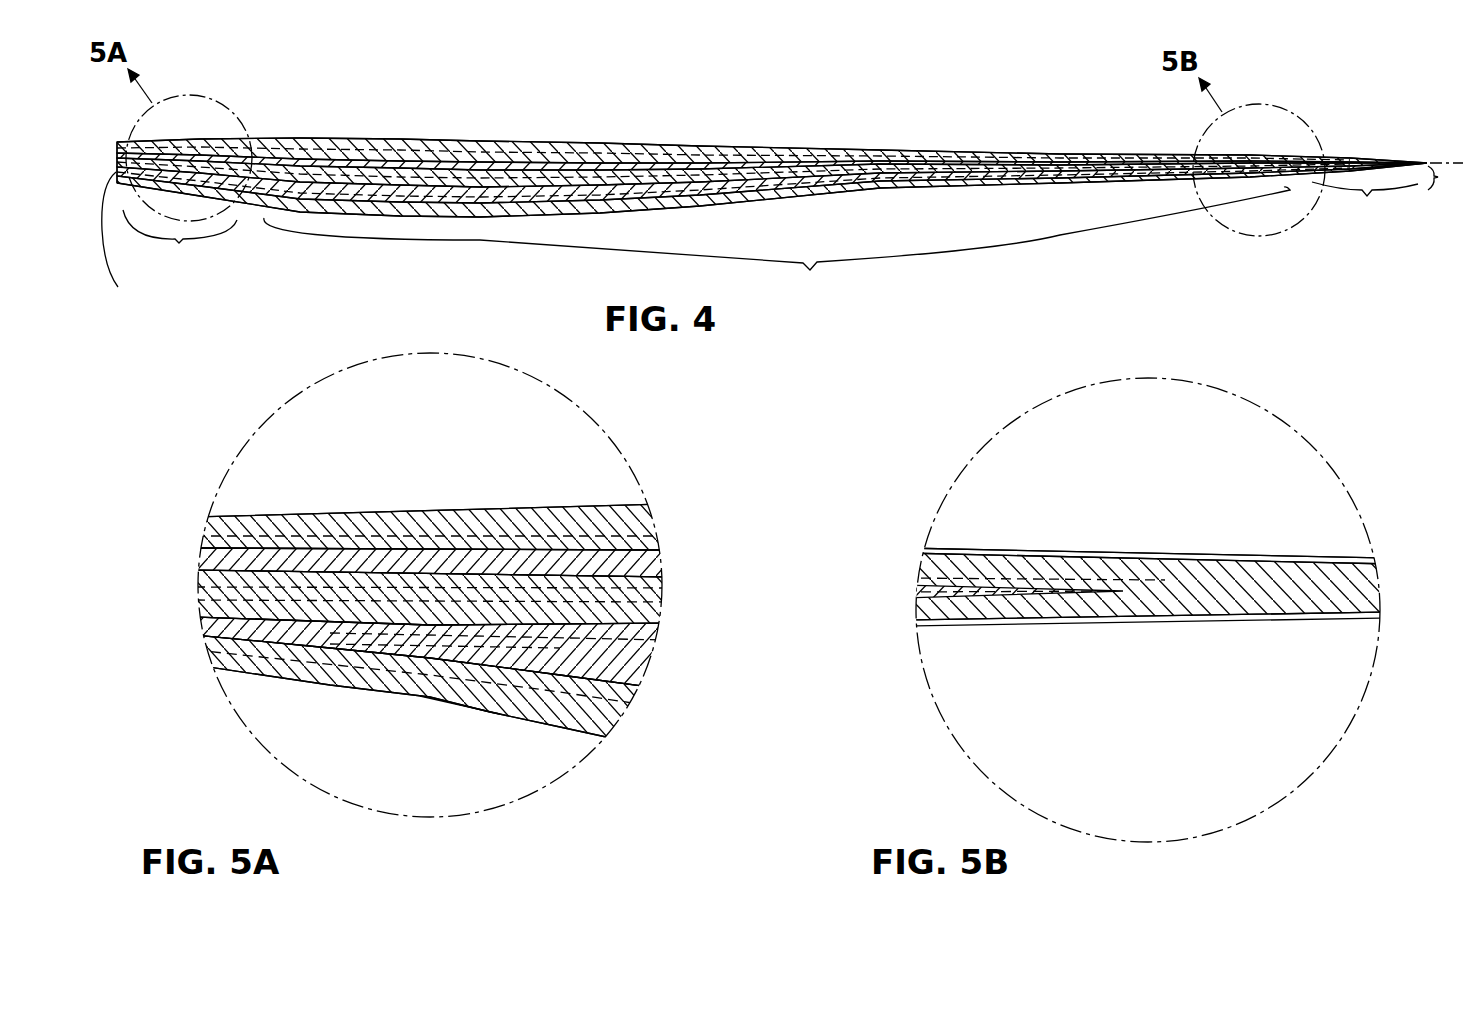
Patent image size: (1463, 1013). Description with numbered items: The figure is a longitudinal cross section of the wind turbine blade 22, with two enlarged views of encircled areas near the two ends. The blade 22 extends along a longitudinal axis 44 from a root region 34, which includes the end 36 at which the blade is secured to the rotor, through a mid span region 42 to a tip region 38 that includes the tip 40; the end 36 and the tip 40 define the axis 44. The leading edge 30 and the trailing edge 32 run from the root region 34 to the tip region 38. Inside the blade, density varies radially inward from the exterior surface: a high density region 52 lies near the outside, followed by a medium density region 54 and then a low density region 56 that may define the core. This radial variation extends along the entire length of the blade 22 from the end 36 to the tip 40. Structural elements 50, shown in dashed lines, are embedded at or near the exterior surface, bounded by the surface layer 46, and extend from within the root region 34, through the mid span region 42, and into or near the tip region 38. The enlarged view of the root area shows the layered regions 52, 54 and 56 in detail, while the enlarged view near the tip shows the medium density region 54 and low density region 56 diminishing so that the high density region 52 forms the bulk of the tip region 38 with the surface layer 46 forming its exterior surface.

In FIG. 4, the wind turbine blade 22 is at (731, 90).
In FIG. 4, the leading edge 30 is at (663, 143).
In FIG. 5A, the leading edge 30 is at (468, 512).
In FIG. 5B, the leading edge 30 is at (1198, 552).
In FIG. 4, the trailing edge 32 is at (352, 218).
In FIG. 5A, the trailing edge 32 is at (343, 682).
In FIG. 4, the root region 34 is at (180, 239).
In FIG. 4, the end 36 is at (123, 234).
In FIG. 4, the tip region 38 is at (1365, 201).
In FIG. 4, the tip 40 is at (1423, 162).
In FIG. 4, the mid span region 42 is at (777, 240).
In FIG. 4, the longitudinal axis 44 is at (1430, 191).
In FIG. 5A, the surface layer 46 is at (421, 699).
In FIG. 5B, the surface layer 46 is at (1048, 548).
In FIG. 4, the structural elements 50 is at (632, 126).
In FIG. 5A, the structural elements 50 is at (415, 578).
In FIG. 5B, the structural elements 50 is at (1134, 594).
In FIG. 4, the high density region 52 is at (823, 153).
In FIG. 5A, the high density region 52 is at (640, 507).
In FIG. 5B, the high density region 52 is at (1289, 577).
In FIG. 4, the medium density region 54 is at (242, 206).
In FIG. 5A, the medium density region 54 is at (652, 560).
In FIG. 5B, the medium density region 54 is at (918, 598).
In FIG. 4, the low density region 56 is at (488, 196).
In FIG. 5A, the low density region 56 is at (648, 612).